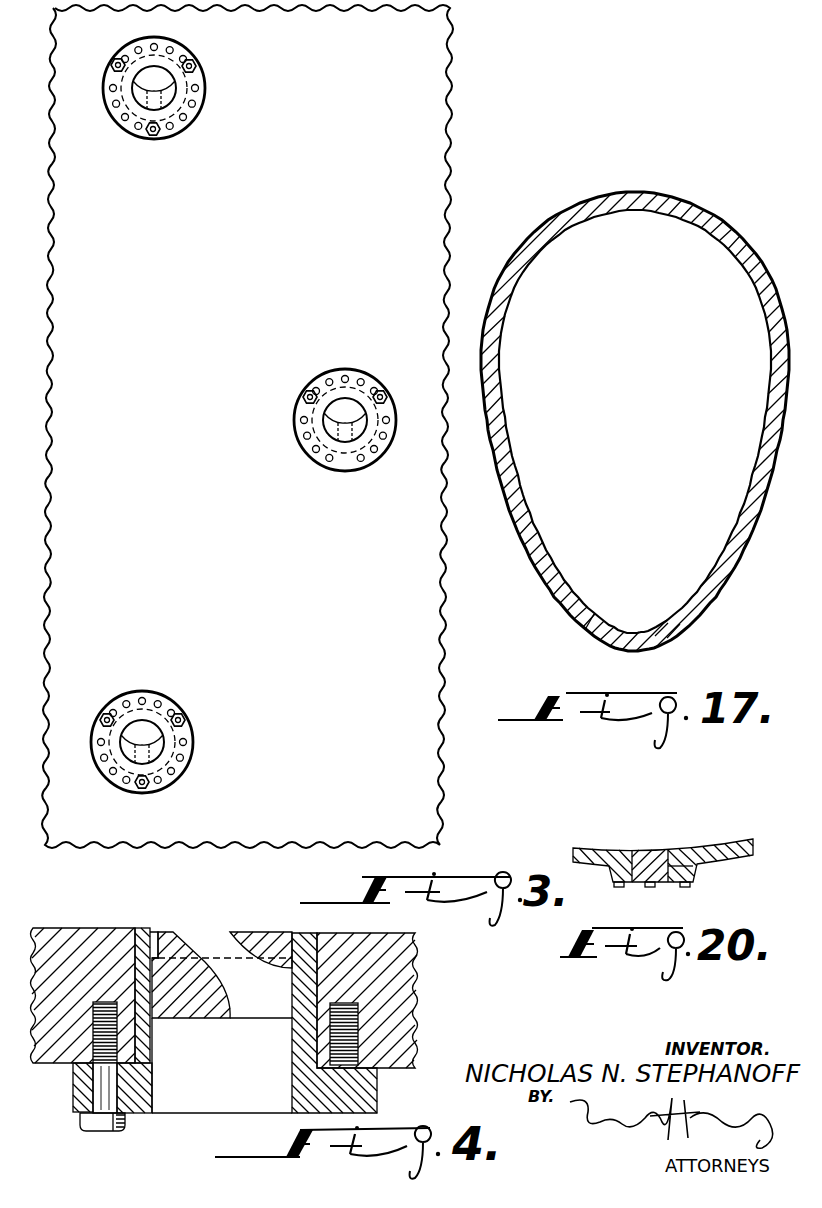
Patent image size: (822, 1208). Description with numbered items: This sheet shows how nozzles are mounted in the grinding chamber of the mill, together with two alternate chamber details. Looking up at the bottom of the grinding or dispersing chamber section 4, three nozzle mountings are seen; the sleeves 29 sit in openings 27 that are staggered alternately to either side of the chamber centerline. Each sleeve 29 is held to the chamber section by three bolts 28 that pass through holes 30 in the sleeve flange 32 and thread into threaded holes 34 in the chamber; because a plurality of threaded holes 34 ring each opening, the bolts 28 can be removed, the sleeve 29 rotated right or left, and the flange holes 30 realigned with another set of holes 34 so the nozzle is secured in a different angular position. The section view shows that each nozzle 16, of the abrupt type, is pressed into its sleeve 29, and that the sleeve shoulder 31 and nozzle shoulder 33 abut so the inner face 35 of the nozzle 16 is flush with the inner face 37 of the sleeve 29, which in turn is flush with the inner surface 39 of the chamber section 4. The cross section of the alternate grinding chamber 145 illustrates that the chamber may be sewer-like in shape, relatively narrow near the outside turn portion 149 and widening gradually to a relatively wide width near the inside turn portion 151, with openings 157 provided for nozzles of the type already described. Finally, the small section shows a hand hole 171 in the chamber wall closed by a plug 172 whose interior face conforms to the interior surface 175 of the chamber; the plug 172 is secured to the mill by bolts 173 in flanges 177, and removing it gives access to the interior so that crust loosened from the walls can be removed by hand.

In FIG. 3, the grinding or dispersing chamber section 4 is at (433, 640).
In FIG. 4, the grinding or dispersing chamber section 4 is at (406, 970).
In FIG. 4, the nozzle 16 is at (257, 938).
In FIG. 3, the opening 27 is at (195, 77).
In FIG. 4, the opening 27 is at (142, 937).
In FIG. 3, the bolt 28 is at (116, 63).
In FIG. 4, the bolt 28 is at (117, 1074).
In FIG. 4, the sleeve 29 is at (155, 934).
In FIG. 4, the hole 30 is at (73, 1077).
In FIG. 4, the shoulder 31 is at (162, 940).
In FIG. 3, the sleeve flange 32 is at (189, 61).
In FIG. 4, the sleeve flange 32 is at (72, 1102).
In FIG. 4, the shoulder 33 is at (165, 962).
In FIG. 3, the threaded hole 34 is at (190, 120).
In FIG. 4, the threaded hole 34 is at (358, 1025).
In FIG. 4, the inner face 35 is at (242, 934).
In FIG. 4, the inner face 37 is at (300, 936).
In FIG. 4, the inner surface 39 is at (70, 928).
In FIG. 17, the grinding chamber 145 is at (730, 556).
In FIG. 17, the outside turn portion 149 is at (596, 612).
In FIG. 17, the inside turn portion 151 is at (632, 205).
In FIG. 17, the opening 157 is at (658, 636).
In FIG. 20, the hand hole 171 is at (636, 857).
In FIG. 20, the plug 172 is at (669, 860).
In FIG. 20, the bolt 173 is at (617, 886).
In FIG. 20, the interior surface 175 is at (607, 850).
In FIG. 20, the flange 177 is at (693, 886).